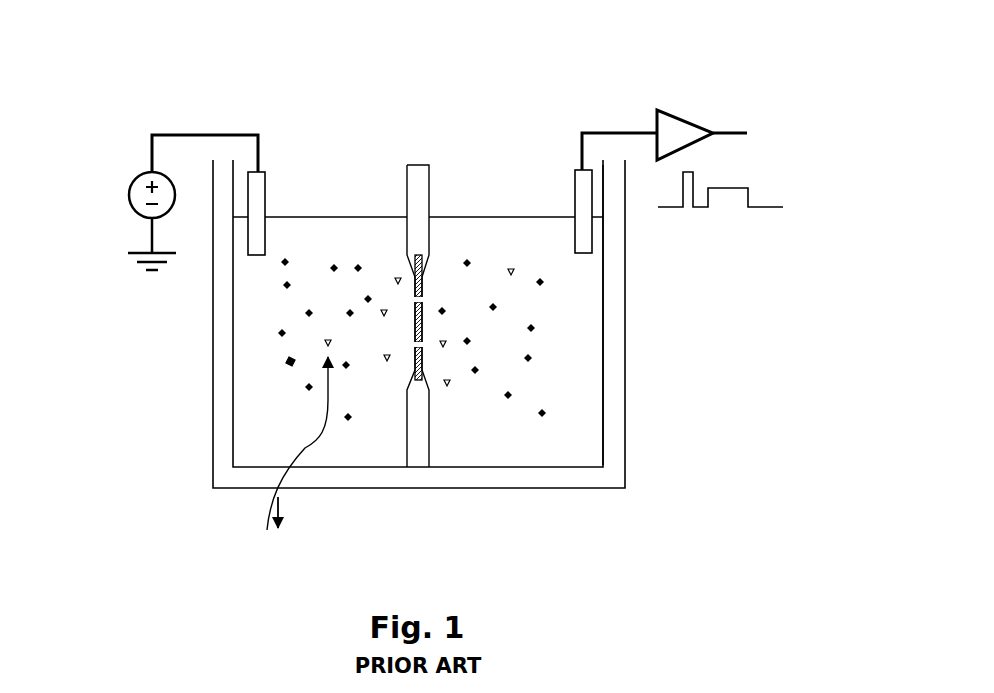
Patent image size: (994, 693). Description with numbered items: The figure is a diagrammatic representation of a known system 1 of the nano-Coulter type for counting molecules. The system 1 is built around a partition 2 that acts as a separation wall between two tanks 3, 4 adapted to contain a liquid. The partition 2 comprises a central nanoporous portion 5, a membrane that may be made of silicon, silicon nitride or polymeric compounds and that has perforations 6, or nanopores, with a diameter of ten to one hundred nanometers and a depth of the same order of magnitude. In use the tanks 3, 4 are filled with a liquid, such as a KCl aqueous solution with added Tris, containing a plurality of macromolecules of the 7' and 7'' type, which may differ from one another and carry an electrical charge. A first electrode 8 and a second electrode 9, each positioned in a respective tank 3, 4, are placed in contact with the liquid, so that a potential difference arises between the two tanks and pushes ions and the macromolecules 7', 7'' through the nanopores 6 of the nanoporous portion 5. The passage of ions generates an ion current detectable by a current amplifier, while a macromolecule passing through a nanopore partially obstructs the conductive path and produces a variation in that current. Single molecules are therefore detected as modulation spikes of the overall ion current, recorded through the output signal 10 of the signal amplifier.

The system 1 is at (528, 120).
The partition 2 is at (409, 420).
The tank 3 is at (190, 433).
The tank 4 is at (636, 427).
The central nanoporous portion 5 is at (425, 356).
The perforations 6 is at (413, 300).
The macromolecules of first type 7' is at (294, 451).
The macromolecules of second type 7'' is at (194, 378).
The first electrode 8 is at (260, 194).
The second electrode 9 is at (573, 194).
The output signal 10 is at (705, 210).